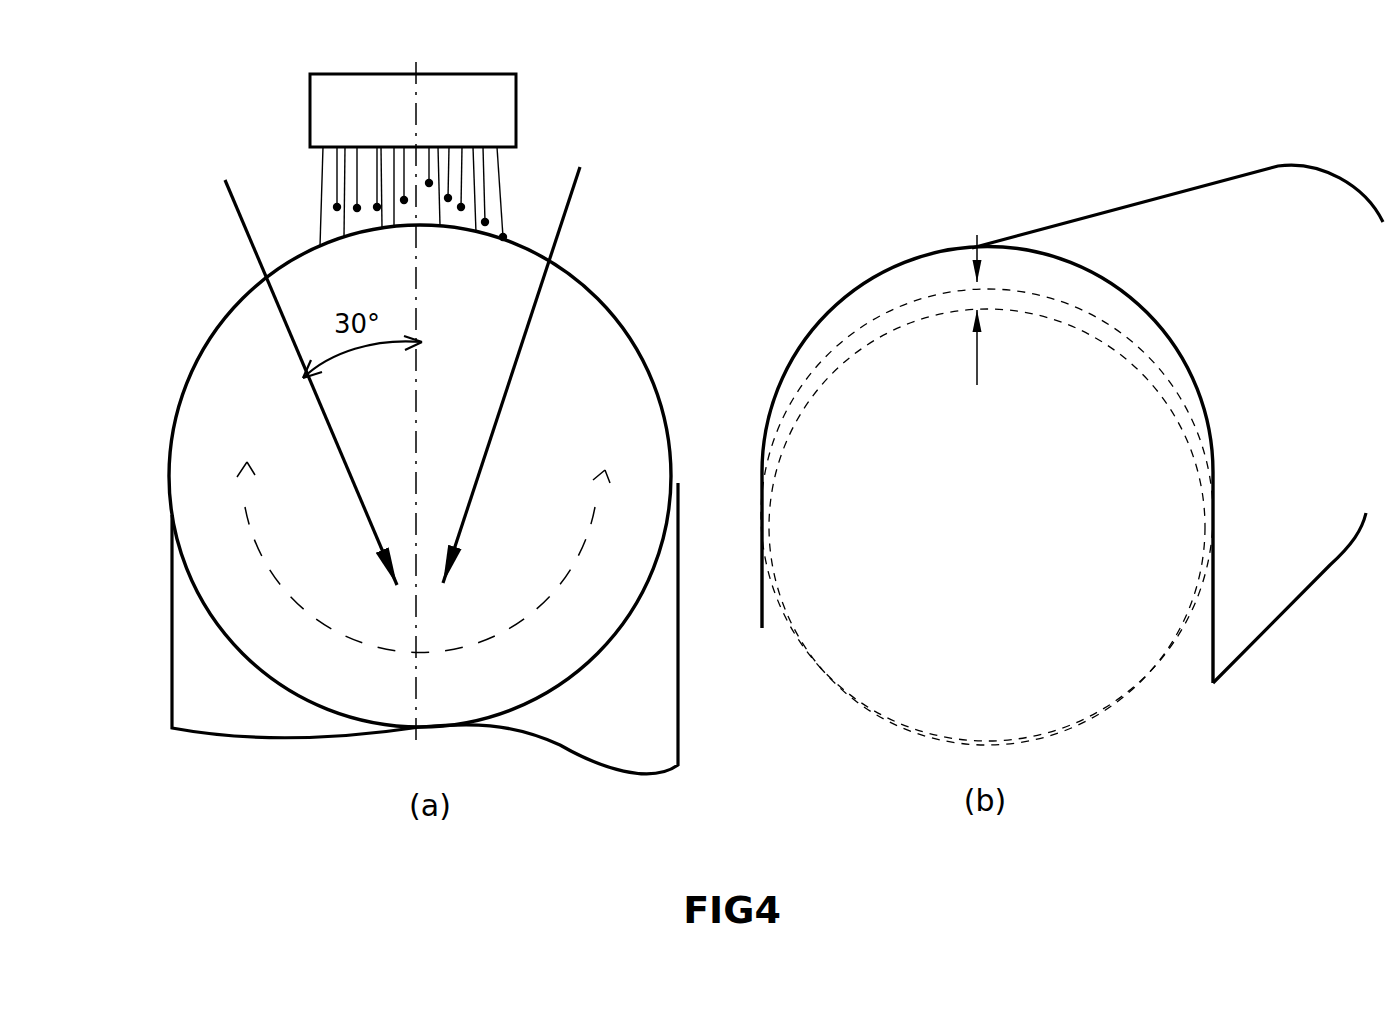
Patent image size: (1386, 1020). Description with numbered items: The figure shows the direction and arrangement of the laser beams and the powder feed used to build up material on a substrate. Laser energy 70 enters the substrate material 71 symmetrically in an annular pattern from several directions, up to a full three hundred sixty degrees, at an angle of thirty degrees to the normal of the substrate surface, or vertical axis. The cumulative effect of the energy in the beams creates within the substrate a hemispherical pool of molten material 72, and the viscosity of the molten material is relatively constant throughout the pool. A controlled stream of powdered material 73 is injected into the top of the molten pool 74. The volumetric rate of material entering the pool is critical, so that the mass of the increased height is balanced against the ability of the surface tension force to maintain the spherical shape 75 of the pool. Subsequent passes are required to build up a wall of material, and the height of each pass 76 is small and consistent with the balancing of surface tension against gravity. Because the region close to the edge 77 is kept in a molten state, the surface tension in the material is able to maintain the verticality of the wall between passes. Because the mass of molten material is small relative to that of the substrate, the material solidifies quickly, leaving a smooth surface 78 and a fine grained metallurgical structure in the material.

The laser energy 70 is at (240, 222).
The substrate material 71 is at (425, 628).
The hemispherical pool of molten material 72 is at (423, 565).
The controlled stream of powdered material 73 is at (485, 192).
The top of the molten pool 74 is at (380, 272).
The spherical shape 75 is at (640, 345).
The height of each pass 76 is at (975, 298).
The edge 77 is at (765, 445).
The smooth surface 78 is at (763, 583).